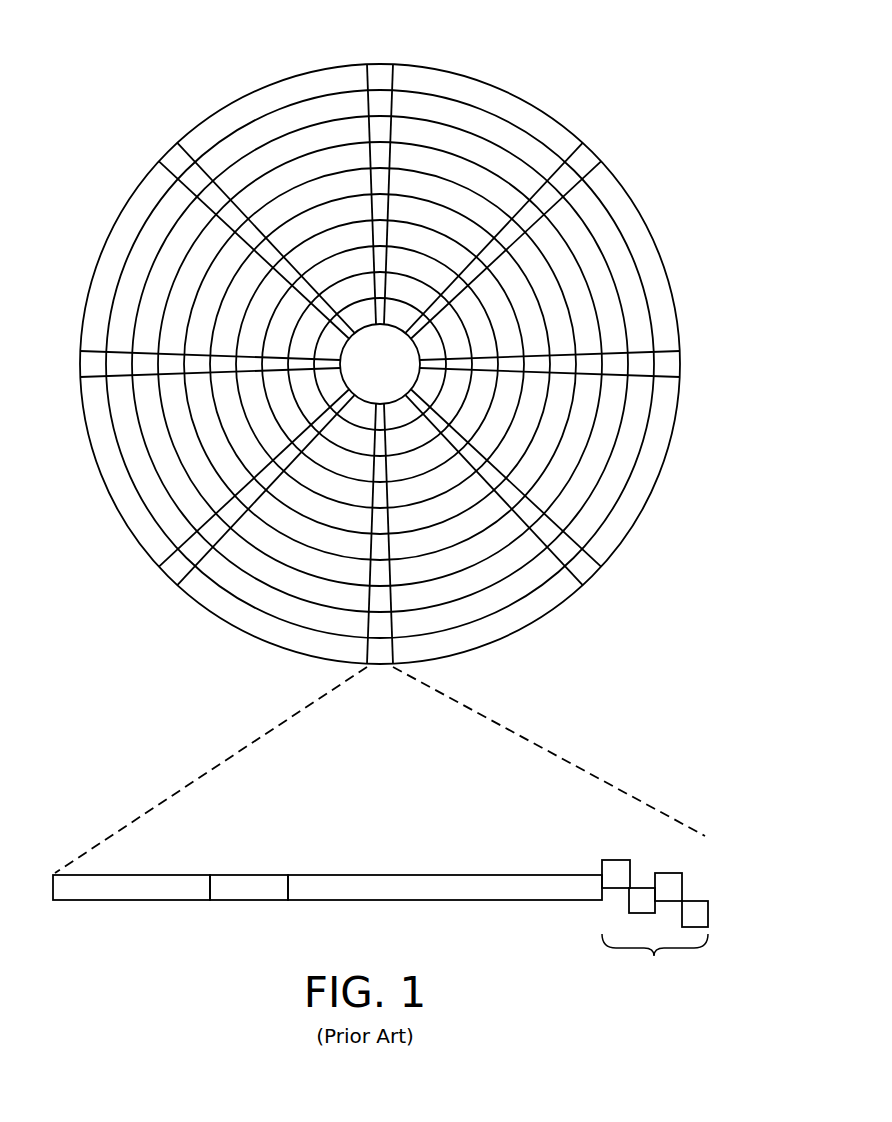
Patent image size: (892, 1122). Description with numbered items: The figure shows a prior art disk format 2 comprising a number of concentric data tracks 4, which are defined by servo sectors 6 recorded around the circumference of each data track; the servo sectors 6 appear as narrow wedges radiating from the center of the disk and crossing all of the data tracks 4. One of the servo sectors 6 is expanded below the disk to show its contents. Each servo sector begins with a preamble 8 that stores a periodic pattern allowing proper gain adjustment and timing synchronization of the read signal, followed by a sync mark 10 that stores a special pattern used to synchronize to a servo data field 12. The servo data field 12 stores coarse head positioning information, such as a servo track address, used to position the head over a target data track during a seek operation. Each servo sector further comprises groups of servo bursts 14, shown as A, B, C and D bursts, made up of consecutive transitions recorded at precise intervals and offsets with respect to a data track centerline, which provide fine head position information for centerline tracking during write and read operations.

The disk format 2 is at (150, 66).
The data tracks 4 is at (482, 125).
The servo sectors 6 is at (383, 498).
The preamble 8 is at (113, 901).
The sync mark 10 is at (248, 901).
The servo data field 12 is at (432, 901).
The servo bursts 14 is at (586, 842).